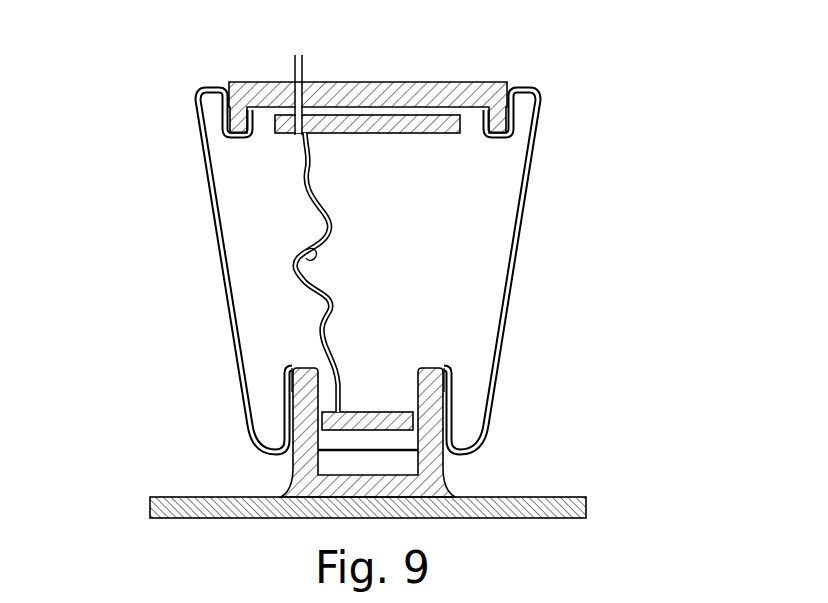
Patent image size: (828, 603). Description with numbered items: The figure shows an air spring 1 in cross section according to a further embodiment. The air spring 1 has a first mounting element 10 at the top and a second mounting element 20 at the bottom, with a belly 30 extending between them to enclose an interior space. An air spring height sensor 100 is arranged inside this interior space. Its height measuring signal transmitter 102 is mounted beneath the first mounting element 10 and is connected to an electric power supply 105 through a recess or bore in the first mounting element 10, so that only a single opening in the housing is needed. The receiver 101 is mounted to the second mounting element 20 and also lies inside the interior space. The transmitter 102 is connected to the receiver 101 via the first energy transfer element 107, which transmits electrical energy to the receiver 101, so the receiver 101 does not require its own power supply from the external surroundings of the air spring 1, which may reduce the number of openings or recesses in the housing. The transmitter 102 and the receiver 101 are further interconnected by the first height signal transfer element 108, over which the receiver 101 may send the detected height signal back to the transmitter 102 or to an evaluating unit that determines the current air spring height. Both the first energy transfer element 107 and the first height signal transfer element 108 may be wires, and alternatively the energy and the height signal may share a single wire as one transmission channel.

The air spring 1 is at (122, 229).
The first mounting element 10 is at (468, 88).
The second mounting element 20 is at (528, 510).
The belly 30 is at (236, 326).
The air spring height sensor 100 is at (461, 171).
The receiver 101 is at (387, 412).
The height measuring signal transmitter 102 is at (425, 135).
The electric power supply 105 is at (292, 72).
The first energy transfer element 107 is at (215, 270).
The first height signal transfer element 108 is at (298, 262).